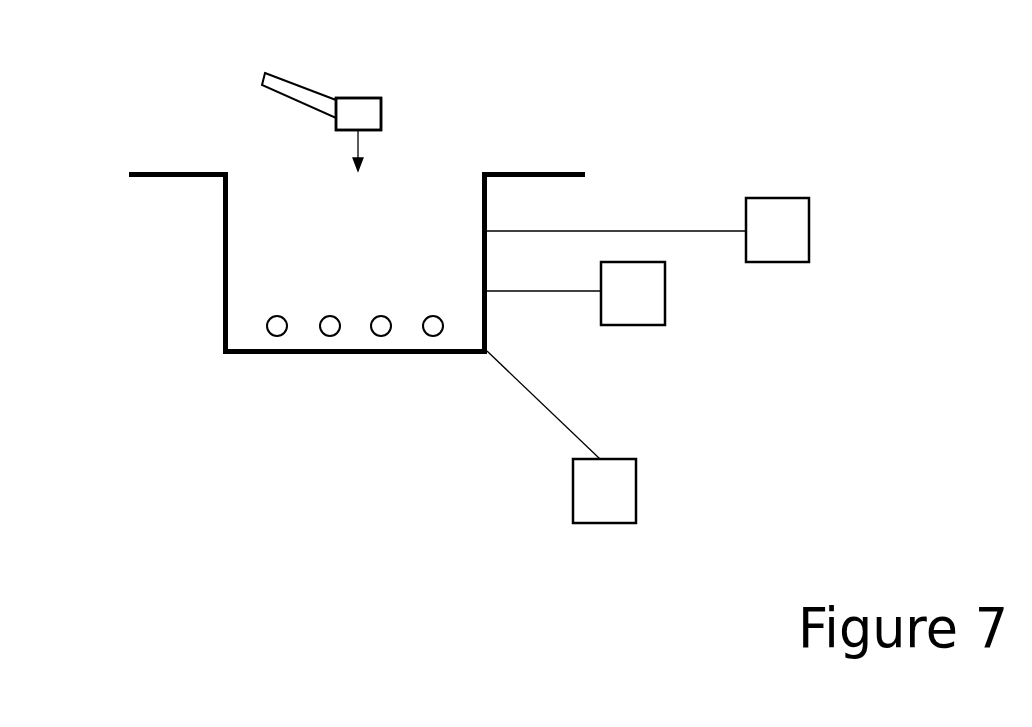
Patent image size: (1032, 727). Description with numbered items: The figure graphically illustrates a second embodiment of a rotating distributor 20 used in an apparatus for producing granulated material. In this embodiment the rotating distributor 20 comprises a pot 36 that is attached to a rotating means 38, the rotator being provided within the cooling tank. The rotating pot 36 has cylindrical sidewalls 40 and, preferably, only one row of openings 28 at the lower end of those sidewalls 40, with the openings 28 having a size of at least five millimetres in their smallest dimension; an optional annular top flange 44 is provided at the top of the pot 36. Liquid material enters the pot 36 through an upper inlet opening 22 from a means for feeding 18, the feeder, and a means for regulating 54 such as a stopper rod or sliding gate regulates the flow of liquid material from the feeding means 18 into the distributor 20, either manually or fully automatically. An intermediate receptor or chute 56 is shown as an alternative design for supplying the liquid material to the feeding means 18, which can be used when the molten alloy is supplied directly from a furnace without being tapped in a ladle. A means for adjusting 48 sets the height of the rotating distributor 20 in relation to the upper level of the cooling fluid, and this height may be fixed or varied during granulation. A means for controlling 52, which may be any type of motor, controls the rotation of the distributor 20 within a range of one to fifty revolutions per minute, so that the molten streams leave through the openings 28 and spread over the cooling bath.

The means for feeding 18 is at (367, 98).
The means for regulating 54 is at (358, 114).
The intermediate receptor or chute 56 is at (263, 80).
The upper inlet opening 22 is at (352, 173).
The rotating distributor 20 is at (500, 134).
The annular top flange 44 is at (168, 172).
The cylindrical sidewalls 40 is at (222, 240).
The openings 28 is at (355, 392).
The pot 36 is at (234, 404).
The rotating means 38 is at (778, 198).
The means for adjusting 48 is at (633, 325).
The means for controlling 52 is at (605, 523).